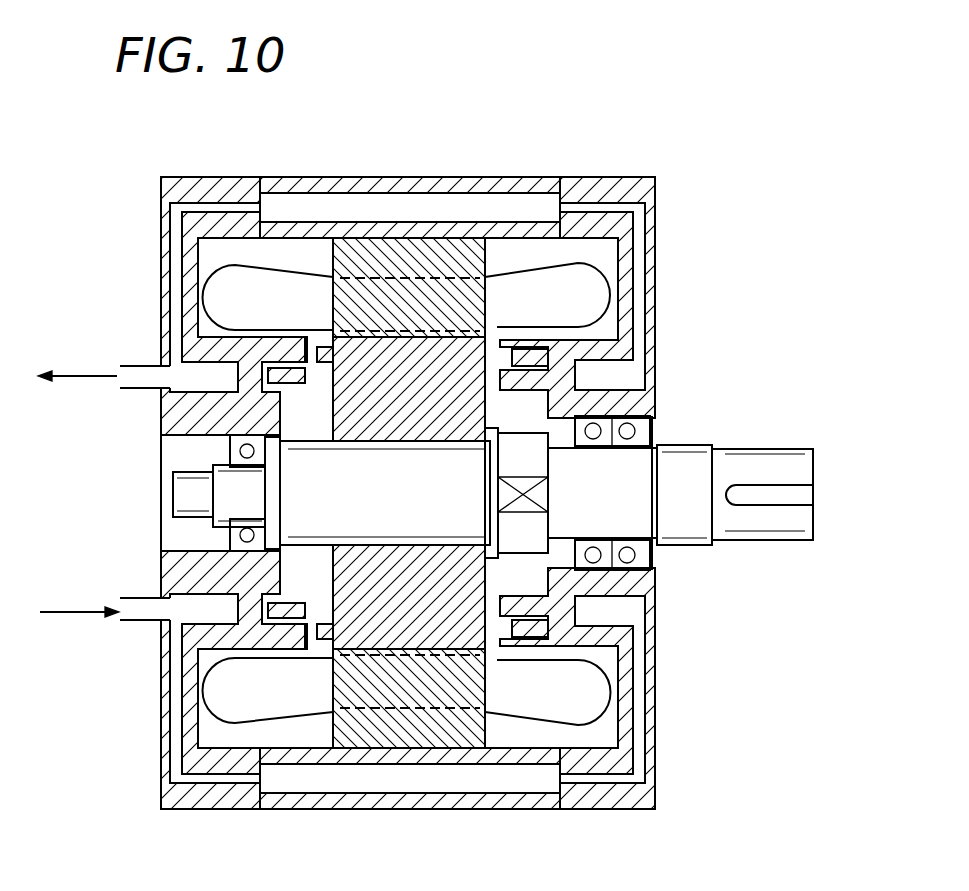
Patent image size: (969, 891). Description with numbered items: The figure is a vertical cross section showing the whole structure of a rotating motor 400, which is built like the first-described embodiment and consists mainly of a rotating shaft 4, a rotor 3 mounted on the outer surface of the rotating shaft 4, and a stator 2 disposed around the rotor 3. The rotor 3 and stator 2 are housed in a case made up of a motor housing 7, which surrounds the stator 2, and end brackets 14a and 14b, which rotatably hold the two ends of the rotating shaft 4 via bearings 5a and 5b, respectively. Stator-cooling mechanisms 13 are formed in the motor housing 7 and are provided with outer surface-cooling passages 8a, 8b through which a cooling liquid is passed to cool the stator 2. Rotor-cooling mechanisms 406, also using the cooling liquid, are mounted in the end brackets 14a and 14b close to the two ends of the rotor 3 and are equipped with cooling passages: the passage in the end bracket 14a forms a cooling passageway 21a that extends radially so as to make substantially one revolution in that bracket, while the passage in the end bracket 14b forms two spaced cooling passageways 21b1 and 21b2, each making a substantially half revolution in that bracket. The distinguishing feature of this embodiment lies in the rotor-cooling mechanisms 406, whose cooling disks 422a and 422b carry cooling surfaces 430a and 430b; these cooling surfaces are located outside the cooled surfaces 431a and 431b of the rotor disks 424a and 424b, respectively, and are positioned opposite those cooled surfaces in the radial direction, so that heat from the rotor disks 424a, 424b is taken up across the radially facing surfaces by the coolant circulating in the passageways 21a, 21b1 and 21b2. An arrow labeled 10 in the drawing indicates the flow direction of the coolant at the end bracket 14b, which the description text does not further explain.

The rotating motor 400 is at (683, 138).
The stator-cooling mechanism 13 is at (355, 176).
The motor housing 7 is at (410, 178).
The outer surface-cooling passage 8a is at (470, 200).
The outer surface-cooling passage 8b is at (403, 780).
The stator 2 is at (452, 265).
The rotor 3 is at (363, 377).
The end bracket 14a is at (660, 205).
The end bracket 14b is at (160, 190).
The rotor-cooling mechanism 406 is at (270, 340).
The cooling disk 422a is at (557, 353).
The cooling disk 422b is at (293, 353).
The cooling passageway 21a is at (620, 372).
The cooling passageway 21b1 is at (205, 615).
The cooling passageway 21b2 is at (208, 372).
The cooling surface 430a is at (557, 380).
The cooling surface 430b is at (265, 393).
The rotor disk 424a is at (520, 402).
The rotor disk 424b is at (232, 437).
The bearing 5a is at (658, 560).
The bearing 5b is at (215, 537).
The cooled surface 431a is at (483, 392).
The cooled surface 431b is at (297, 370).
The rotating shaft 4 is at (788, 533).
The coolant flow 10 is at (90, 380).